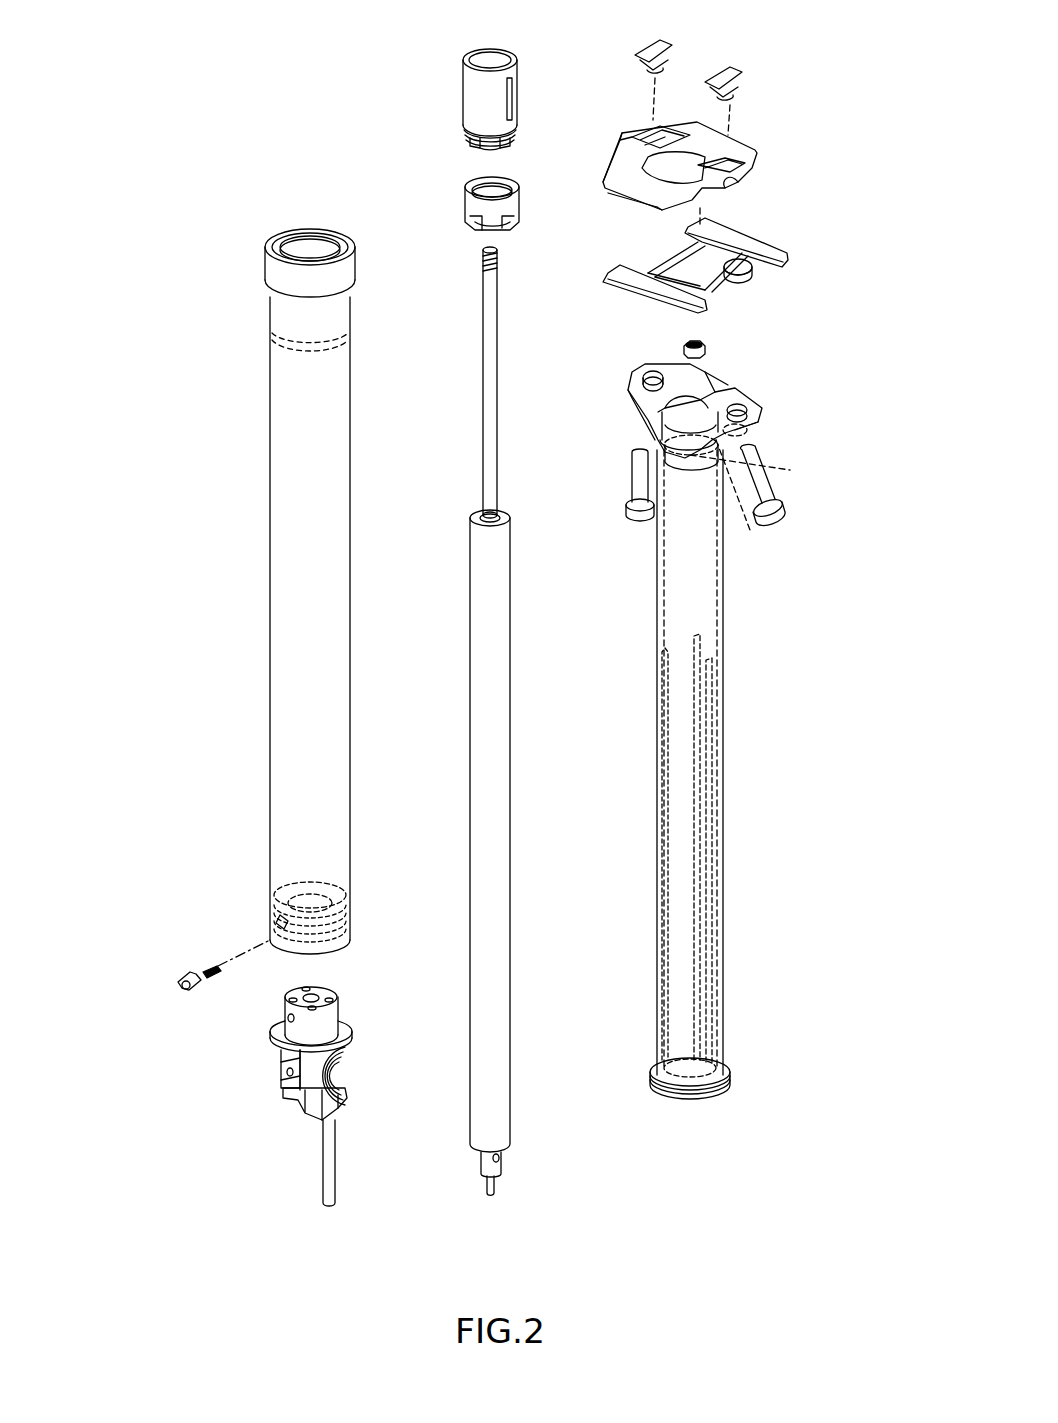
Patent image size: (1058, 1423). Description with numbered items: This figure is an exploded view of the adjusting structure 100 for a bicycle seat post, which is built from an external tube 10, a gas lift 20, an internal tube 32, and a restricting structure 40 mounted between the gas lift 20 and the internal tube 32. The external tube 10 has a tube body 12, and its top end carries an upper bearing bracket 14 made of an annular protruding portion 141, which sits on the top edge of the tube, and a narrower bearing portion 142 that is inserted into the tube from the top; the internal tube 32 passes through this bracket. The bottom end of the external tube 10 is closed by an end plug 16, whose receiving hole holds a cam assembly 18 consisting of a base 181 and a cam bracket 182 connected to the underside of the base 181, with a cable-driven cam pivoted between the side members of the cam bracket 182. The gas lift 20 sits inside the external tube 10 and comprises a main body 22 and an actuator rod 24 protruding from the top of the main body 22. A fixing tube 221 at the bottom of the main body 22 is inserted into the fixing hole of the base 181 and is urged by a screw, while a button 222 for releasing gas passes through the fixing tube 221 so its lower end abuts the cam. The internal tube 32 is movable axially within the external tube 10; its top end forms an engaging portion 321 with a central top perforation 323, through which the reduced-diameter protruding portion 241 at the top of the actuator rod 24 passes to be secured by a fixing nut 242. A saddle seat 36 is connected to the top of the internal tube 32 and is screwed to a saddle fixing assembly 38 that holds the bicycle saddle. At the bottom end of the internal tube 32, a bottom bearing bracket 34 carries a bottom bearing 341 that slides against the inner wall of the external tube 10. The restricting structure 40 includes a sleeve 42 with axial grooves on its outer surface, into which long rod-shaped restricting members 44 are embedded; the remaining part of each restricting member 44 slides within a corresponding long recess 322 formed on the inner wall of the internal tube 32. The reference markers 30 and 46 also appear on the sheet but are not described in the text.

The adjusting structure 100 is at (187, 86).
The external tube 10 is at (230, 530).
The tube body 12 is at (352, 511).
The upper bearing bracket 14 is at (152, 250).
The annular protruding portion 141 is at (278, 276).
The bearing portion 142 is at (275, 345).
The end plug 16 is at (340, 895).
The cam assembly 18 is at (158, 1032).
The base 181 is at (285, 1015).
The cam bracket 182 is at (285, 1075).
The gas lift 20 is at (465, 600).
The main body 22 is at (500, 742).
The actuator rod 24 is at (486, 368).
The protruding portion 241 is at (484, 256).
The fixing tube 221 is at (482, 1165).
The button for releasing gas 222 is at (497, 1184).
The inner tube assembly 30 is at (650, 570).
The internal tube 32 is at (726, 757).
The engaging portion 321 is at (710, 470).
The recess 322 is at (700, 646).
The top perforation 323 is at (745, 440).
The bottom bearing bracket 34 is at (700, 1098).
The bottom bearing 341 is at (728, 1078).
The saddle seat 36 is at (760, 406).
The saddle fixing assembly 38 is at (780, 238).
The fixing nut 242 is at (700, 343).
The restricting structure 40 is at (430, 92).
The sleeve 42 is at (500, 50).
The restricting member 44 is at (512, 86).
The lock nut 46 is at (470, 205).